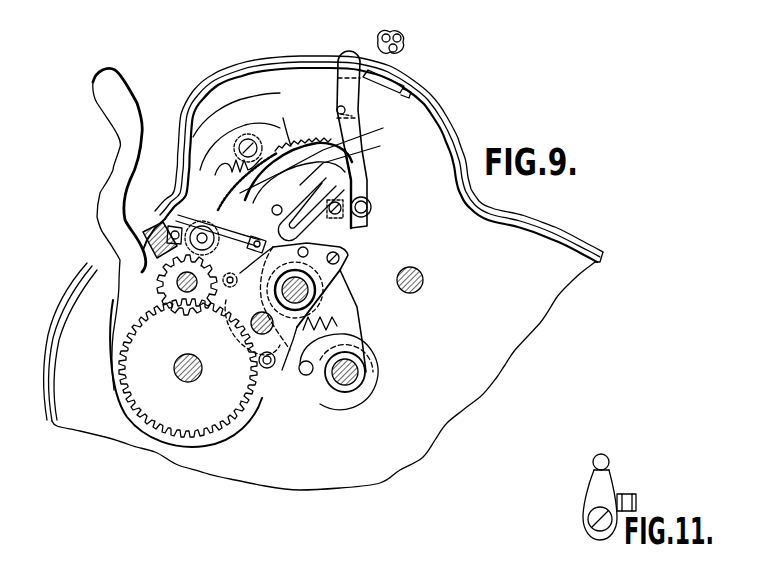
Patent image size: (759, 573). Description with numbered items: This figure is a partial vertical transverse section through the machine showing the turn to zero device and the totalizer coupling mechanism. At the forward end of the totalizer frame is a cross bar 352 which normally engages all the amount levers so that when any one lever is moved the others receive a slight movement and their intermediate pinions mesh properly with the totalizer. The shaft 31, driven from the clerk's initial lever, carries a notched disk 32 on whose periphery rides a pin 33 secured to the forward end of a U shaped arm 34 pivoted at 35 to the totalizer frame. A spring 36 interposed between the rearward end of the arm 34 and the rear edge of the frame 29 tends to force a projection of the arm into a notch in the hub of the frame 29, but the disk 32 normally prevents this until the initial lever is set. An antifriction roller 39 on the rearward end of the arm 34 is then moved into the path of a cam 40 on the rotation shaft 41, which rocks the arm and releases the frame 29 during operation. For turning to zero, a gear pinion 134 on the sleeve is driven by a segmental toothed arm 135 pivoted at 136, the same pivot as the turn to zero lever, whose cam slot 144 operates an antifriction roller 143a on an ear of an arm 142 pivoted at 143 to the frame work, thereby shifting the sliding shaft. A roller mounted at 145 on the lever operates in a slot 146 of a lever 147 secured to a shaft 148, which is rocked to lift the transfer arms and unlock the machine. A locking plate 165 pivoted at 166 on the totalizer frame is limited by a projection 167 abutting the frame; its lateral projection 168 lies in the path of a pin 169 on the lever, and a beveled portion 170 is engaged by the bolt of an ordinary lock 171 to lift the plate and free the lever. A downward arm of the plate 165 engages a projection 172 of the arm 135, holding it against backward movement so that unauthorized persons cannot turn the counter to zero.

In FIG. 9, the frame 29 is at (270, 392).
In FIG. 9, the shaft 31 is at (232, 288).
In FIG. 9, the notched disk 32 is at (251, 329).
In FIG. 9, the pin 33 is at (215, 306).
In FIG. 9, the U shaped arm 34 is at (330, 288).
In FIG. 9, the pivot 35 is at (350, 246).
In FIG. 9, the spring 36 is at (345, 300).
In FIG. 9, the antifriction roller 39 is at (300, 373).
In FIG. 9, the cam 40 is at (328, 398).
In FIG. 9, the rotation shaft 41 is at (360, 373).
In FIG. 9, the gear pinion 134 is at (190, 270).
In FIG. 9, the segmental toothed arm 135 is at (227, 190).
In FIG. 9, the pivot 136 is at (347, 253).
In FIG. 9, the arm 142 is at (258, 250).
In FIG. 11, the arm 142 is at (612, 488).
In FIG. 11, the pivot 143 is at (598, 532).
In FIG. 9, the antifriction roller 143a is at (212, 212).
In FIG. 11, the antifriction roller 143a is at (636, 501).
In FIG. 9, the cam slot 144 is at (210, 180).
In FIG. 9, the roller mounting 145 is at (371, 207).
In FIG. 9, the slot 146 is at (352, 230).
In FIG. 9, the lever 147 is at (357, 162).
In FIG. 9, the shaft 148 is at (327, 156).
In FIG. 9, the plate 165 is at (298, 157).
In FIG. 9, the pivot 166 is at (236, 138).
In FIG. 9, the projection 167 is at (277, 133).
In FIG. 9, the projection 168 is at (335, 120).
In FIG. 9, the pin 169 is at (353, 116).
In FIG. 9, the beveled portion 170 is at (342, 92).
In FIG. 9, the lock 171 is at (395, 90).
In FIG. 9, the projection 172 is at (370, 190).
In FIG. 9, the cross bar 352 is at (93, 297).